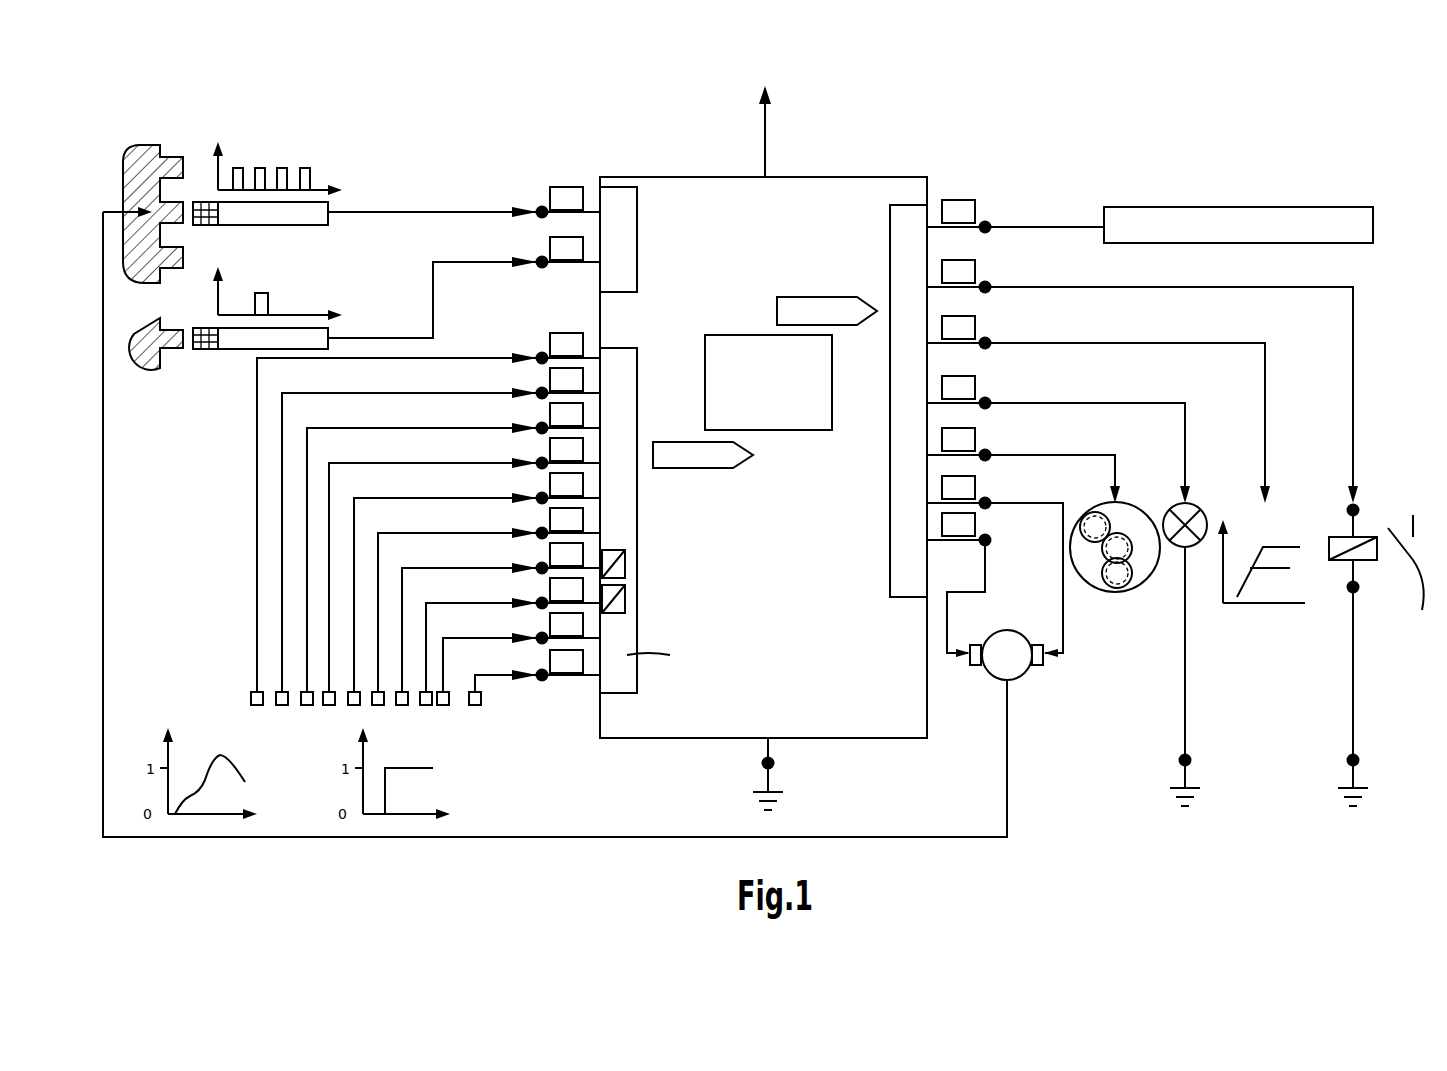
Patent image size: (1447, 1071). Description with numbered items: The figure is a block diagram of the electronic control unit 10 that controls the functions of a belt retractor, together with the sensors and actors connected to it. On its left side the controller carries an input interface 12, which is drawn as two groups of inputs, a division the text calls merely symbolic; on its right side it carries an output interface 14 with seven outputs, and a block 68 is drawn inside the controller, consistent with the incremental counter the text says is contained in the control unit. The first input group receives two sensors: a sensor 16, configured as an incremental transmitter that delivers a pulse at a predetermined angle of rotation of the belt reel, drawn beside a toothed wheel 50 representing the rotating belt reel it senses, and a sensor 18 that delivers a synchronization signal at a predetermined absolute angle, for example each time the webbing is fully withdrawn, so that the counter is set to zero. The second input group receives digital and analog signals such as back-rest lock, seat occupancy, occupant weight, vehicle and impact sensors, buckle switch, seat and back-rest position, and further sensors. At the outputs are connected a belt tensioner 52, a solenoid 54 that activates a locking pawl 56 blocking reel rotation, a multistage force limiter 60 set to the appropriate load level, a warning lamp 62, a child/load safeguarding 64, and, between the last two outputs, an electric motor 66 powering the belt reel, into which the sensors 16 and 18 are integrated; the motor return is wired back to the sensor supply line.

The electronic control unit 10 is at (775, 586).
The input interface 12 is at (628, 268).
The output interface 14 is at (903, 433).
The sensor 16 is at (280, 214).
The sensor 18 is at (246, 341).
The sensor wheel 50 is at (137, 165).
The display unit 52 is at (1254, 220).
The relay 54 is at (1341, 536).
The switch 56 is at (1410, 576).
The characteristic curve actuator 60 is at (1268, 603).
The indicator lamp 62 is at (1199, 505).
The pump 64 is at (1100, 590).
The electric motor 66 is at (1026, 670).
The memory 68 is at (771, 397).